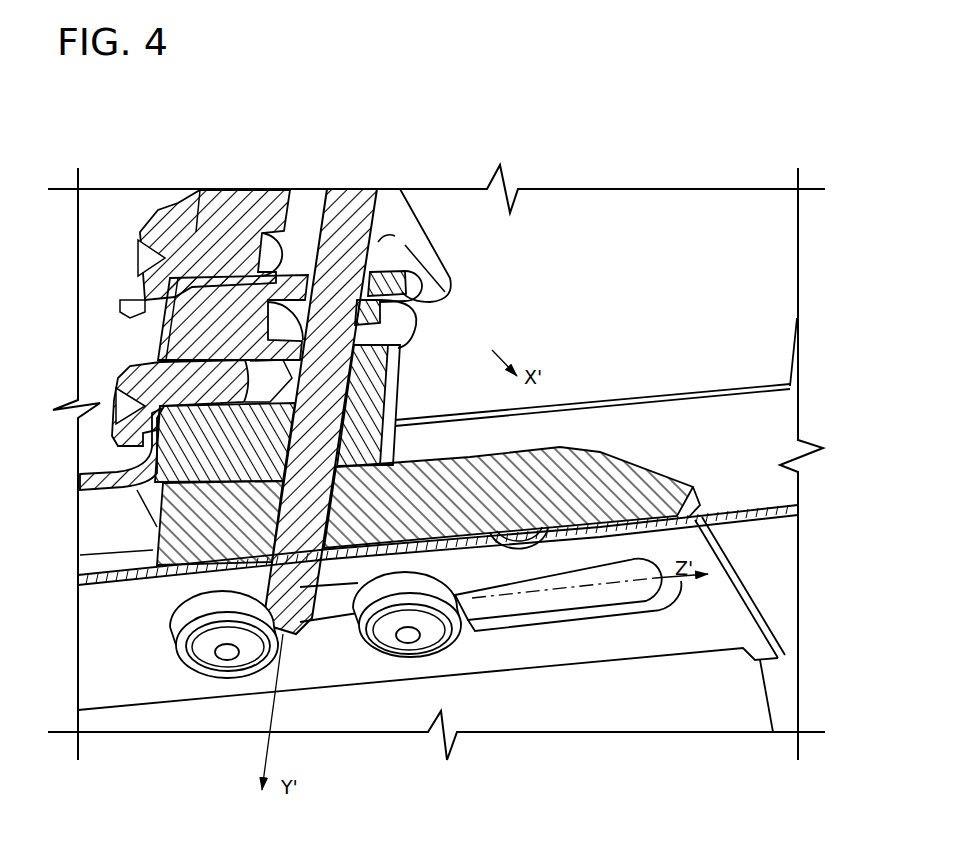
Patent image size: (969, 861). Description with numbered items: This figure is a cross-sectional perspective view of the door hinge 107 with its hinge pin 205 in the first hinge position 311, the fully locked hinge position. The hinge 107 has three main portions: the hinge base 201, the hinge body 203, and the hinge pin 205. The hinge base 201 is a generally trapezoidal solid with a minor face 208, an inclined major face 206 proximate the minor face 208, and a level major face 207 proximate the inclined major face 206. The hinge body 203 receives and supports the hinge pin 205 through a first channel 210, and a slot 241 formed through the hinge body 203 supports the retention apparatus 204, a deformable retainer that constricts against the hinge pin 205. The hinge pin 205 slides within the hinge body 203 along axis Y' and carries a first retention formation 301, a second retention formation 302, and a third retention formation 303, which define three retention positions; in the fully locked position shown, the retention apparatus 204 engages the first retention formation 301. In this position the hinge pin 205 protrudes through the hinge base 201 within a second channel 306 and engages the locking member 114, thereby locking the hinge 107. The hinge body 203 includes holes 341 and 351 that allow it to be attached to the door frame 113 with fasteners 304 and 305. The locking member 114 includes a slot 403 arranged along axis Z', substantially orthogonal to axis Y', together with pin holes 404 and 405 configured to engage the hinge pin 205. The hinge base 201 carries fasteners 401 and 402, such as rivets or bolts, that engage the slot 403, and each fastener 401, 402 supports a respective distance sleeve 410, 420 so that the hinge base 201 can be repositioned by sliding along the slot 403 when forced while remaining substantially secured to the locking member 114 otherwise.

The door hinge 107 is at (518, 264).
The door frame 113 is at (90, 480).
The locking member 114 is at (690, 631).
The hinge base 201 is at (618, 494).
The hinge body 203 is at (362, 360).
The retention apparatus 204 is at (384, 318).
The hinge pin 205 is at (368, 233).
The inclined major face 206 is at (597, 464).
The level major face 207 is at (463, 454).
The minor face 208 is at (693, 516).
The first channel 210 is at (372, 272).
The slot 241 is at (410, 331).
The first retention formation 301 is at (350, 377).
The second retention formation 302 is at (337, 410).
The third retention formation 303 is at (336, 520).
The fastener 304 is at (226, 263).
The fastener 305 is at (211, 389).
The second channel 306 is at (268, 508).
The first hinge position 311 is at (446, 170).
The hole 341 is at (292, 236).
The hole 351 is at (262, 402).
The fastener 401 is at (407, 636).
The fastener 402 is at (225, 652).
The slot 403 is at (575, 607).
The pin hole 404 is at (327, 538).
The pin hole 405 is at (523, 530).
The distance sleeve 410 is at (450, 640).
The distance sleeve 420 is at (192, 660).